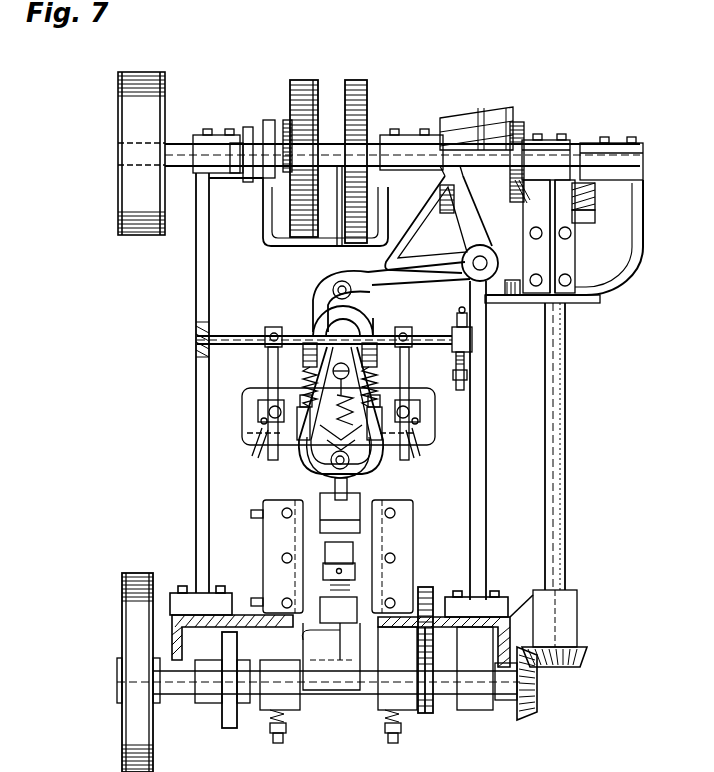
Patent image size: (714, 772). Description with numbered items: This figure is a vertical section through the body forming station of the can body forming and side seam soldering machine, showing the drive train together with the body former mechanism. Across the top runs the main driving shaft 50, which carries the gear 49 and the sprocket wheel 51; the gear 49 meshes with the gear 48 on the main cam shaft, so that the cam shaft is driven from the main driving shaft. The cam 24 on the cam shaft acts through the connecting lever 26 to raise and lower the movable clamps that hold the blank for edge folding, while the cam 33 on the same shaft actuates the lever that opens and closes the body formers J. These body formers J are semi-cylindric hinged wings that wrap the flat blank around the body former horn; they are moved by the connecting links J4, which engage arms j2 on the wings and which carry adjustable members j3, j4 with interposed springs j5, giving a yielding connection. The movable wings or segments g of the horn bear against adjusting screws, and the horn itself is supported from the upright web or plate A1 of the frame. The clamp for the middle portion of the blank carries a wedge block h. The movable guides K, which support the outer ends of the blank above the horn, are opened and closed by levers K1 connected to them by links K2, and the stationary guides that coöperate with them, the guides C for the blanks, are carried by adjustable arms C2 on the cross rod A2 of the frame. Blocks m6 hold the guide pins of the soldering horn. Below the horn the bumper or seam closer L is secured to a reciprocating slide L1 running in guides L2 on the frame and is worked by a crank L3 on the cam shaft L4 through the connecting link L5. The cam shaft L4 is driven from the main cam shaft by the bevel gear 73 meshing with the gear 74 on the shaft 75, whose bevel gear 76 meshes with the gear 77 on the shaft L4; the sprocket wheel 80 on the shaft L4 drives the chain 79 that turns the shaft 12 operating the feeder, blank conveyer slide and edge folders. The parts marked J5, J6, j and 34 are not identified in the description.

The gear 48 is at (302, 82).
The cam 24 is at (360, 82).
The gear 49 is at (288, 140).
The main driving shaft 50 is at (181, 140).
The cam 33 is at (480, 108).
The sprocket wheel 51 is at (518, 122).
The bevel gear 73 is at (540, 135).
The gear 74 is at (596, 203).
The connecting lever 26 is at (340, 230).
The adjustable member j3 is at (433, 225).
The cross rod A2 is at (230, 334).
The adjustable member j4 is at (300, 332).
The spring j5 is at (343, 337).
The wedge block h is at (341, 363).
The lever K1 is at (258, 400).
The adjustable arm C2 is at (268, 356).
The connecting link J4 is at (338, 401).
The link K2 is at (255, 402).
The spring block J5 is at (296, 402).
The spring block J6 is at (372, 398).
The guides for the blanks C is at (410, 376).
The movable guide K is at (268, 434).
The arm j2 is at (300, 448).
The body former J is at (302, 455).
The movable wing or segment of the horn g is at (370, 448).
The shaft 12 is at (429, 493).
The upright web or plate of the frame A1 is at (462, 440).
The shaft 75 is at (566, 463).
The block m6 is at (335, 472).
The bumper or seam closer L is at (350, 486).
The reciprocating slide L1 is at (340, 513).
The guides L2 is at (332, 556).
The connecting link L5 is at (339, 566).
The crank L3 is at (360, 655).
The cam shaft L4 is at (178, 686).
The gear 34 is at (228, 729).
The sprocket wheel 80 is at (426, 712).
The chain 79 is at (428, 604).
The bevel gear 76 is at (585, 660).
The gear 77 is at (537, 714).
The main lever j is at (341, 410).